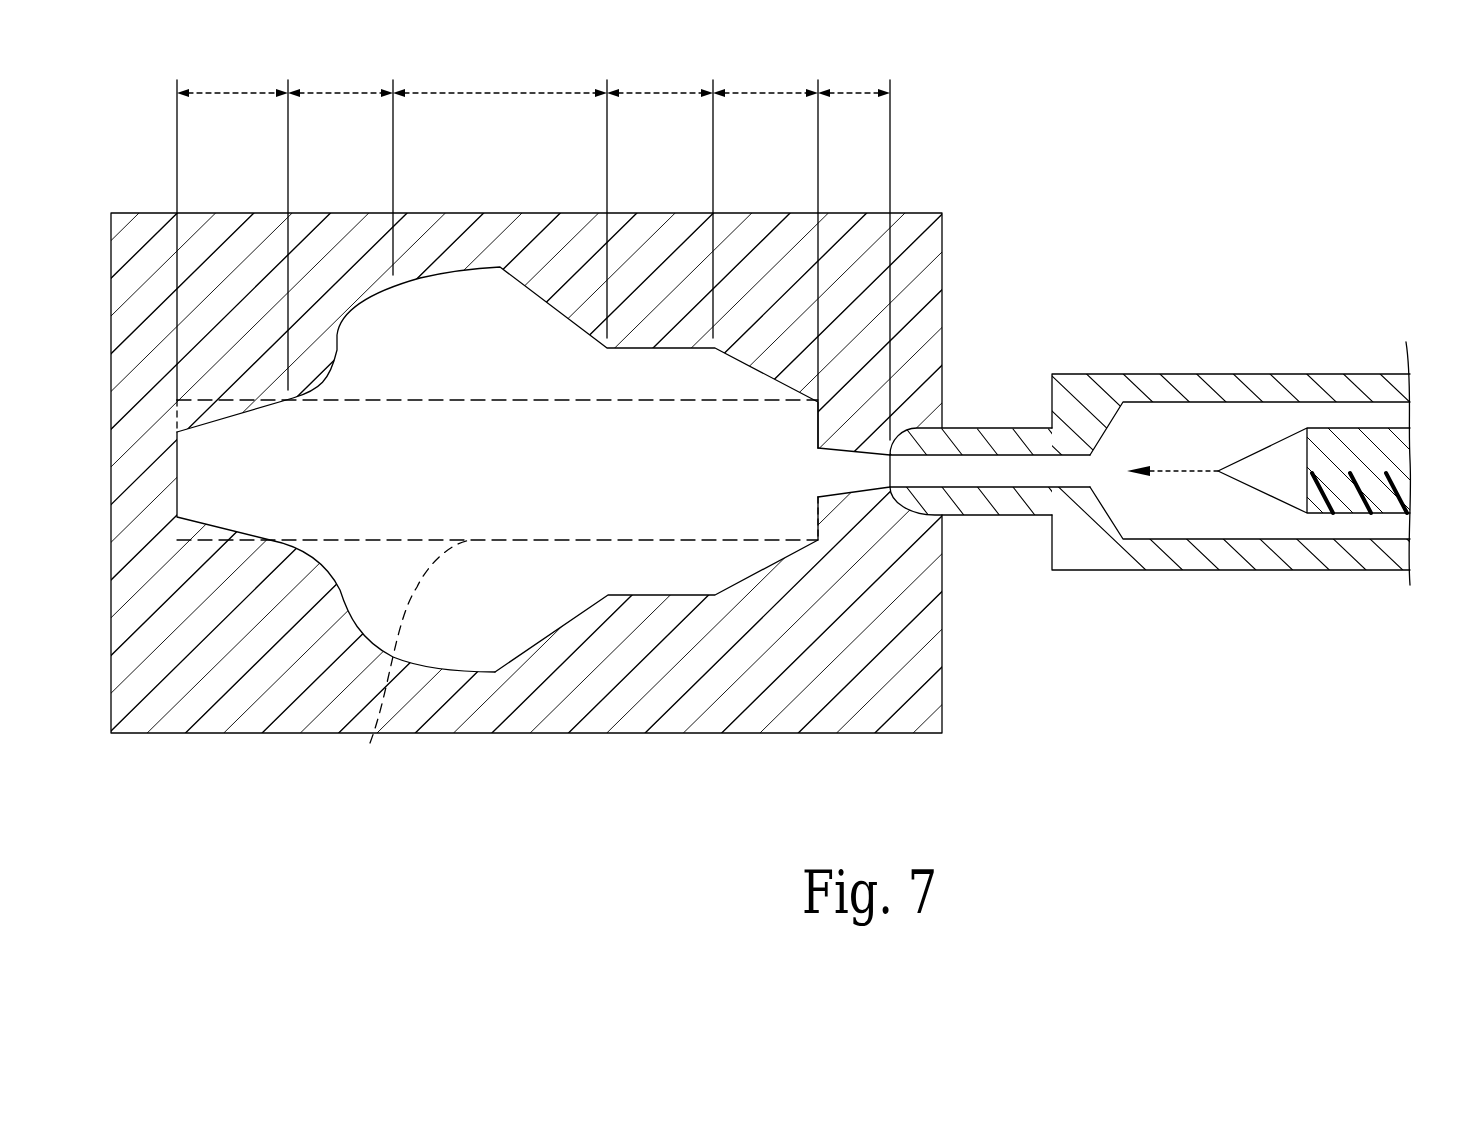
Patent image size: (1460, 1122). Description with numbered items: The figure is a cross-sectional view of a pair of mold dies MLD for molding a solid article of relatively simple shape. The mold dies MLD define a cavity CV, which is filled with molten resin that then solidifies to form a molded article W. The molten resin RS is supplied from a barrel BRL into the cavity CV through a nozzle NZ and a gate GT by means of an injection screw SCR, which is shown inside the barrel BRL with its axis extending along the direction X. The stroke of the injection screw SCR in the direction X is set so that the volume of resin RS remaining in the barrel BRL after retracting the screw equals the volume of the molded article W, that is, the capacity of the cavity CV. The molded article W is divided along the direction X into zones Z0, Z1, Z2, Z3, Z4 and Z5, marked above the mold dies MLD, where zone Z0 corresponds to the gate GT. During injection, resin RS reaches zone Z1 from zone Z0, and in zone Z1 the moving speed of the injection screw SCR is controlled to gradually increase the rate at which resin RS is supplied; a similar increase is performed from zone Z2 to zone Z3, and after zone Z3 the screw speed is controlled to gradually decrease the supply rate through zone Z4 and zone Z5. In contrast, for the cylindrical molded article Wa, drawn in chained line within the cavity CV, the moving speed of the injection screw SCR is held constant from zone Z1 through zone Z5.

The mold dies MLD is at (175, 733).
The cavity CV is at (580, 558).
The molded article W is at (461, 676).
The cylindrical molded article Wa is at (370, 743).
The gate GT is at (865, 507).
The nozzle NZ is at (968, 428).
The barrel BRL is at (1143, 372).
The resin RS is at (1173, 497).
The injection screw SCR is at (1368, 443).
The direction of the injection screw axis X is at (1160, 472).
The zone Z0 is at (854, 249).
The zone Z1 is at (765, 299).
The zone Z2 is at (660, 198).
The zone Z3 is at (500, 166).
The zone Z4 is at (340, 224).
The zone Z5 is at (232, 245).